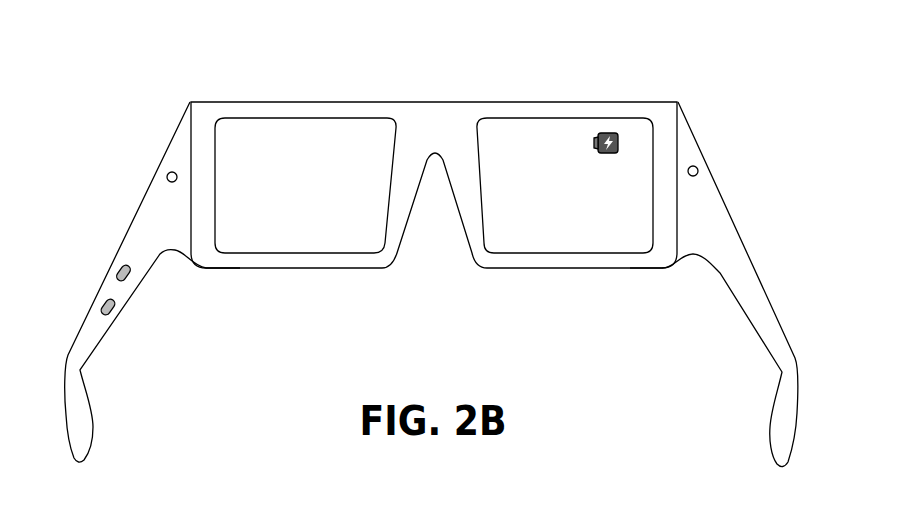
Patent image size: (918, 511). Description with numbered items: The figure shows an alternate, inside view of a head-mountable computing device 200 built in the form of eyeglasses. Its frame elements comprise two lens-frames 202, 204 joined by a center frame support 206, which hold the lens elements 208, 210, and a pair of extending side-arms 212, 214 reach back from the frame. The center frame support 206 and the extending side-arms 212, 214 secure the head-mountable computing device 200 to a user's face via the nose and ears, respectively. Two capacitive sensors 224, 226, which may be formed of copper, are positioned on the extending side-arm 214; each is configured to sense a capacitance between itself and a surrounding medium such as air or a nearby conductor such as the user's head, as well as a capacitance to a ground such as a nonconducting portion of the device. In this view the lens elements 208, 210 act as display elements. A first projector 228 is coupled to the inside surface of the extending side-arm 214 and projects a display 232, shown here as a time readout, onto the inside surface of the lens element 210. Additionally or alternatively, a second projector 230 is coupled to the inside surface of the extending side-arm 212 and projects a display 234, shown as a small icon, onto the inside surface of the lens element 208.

The head-mountable computing device 200 is at (238, 88).
The lens-frame 202 is at (643, 268).
The lens-frame 204 is at (236, 269).
The center frame support 206 is at (432, 102).
The lens element 208 is at (530, 243).
The lens element 210 is at (322, 245).
The extending side-arm 212 is at (728, 212).
The extending side-arm 214 is at (118, 248).
The capacitive sensor 224 is at (131, 271).
The capacitive sensor 226 is at (117, 305).
The first projector 228 is at (167, 176).
The second projector 230 is at (693, 166).
The display 232 is at (299, 148).
The display 234 is at (596, 152).